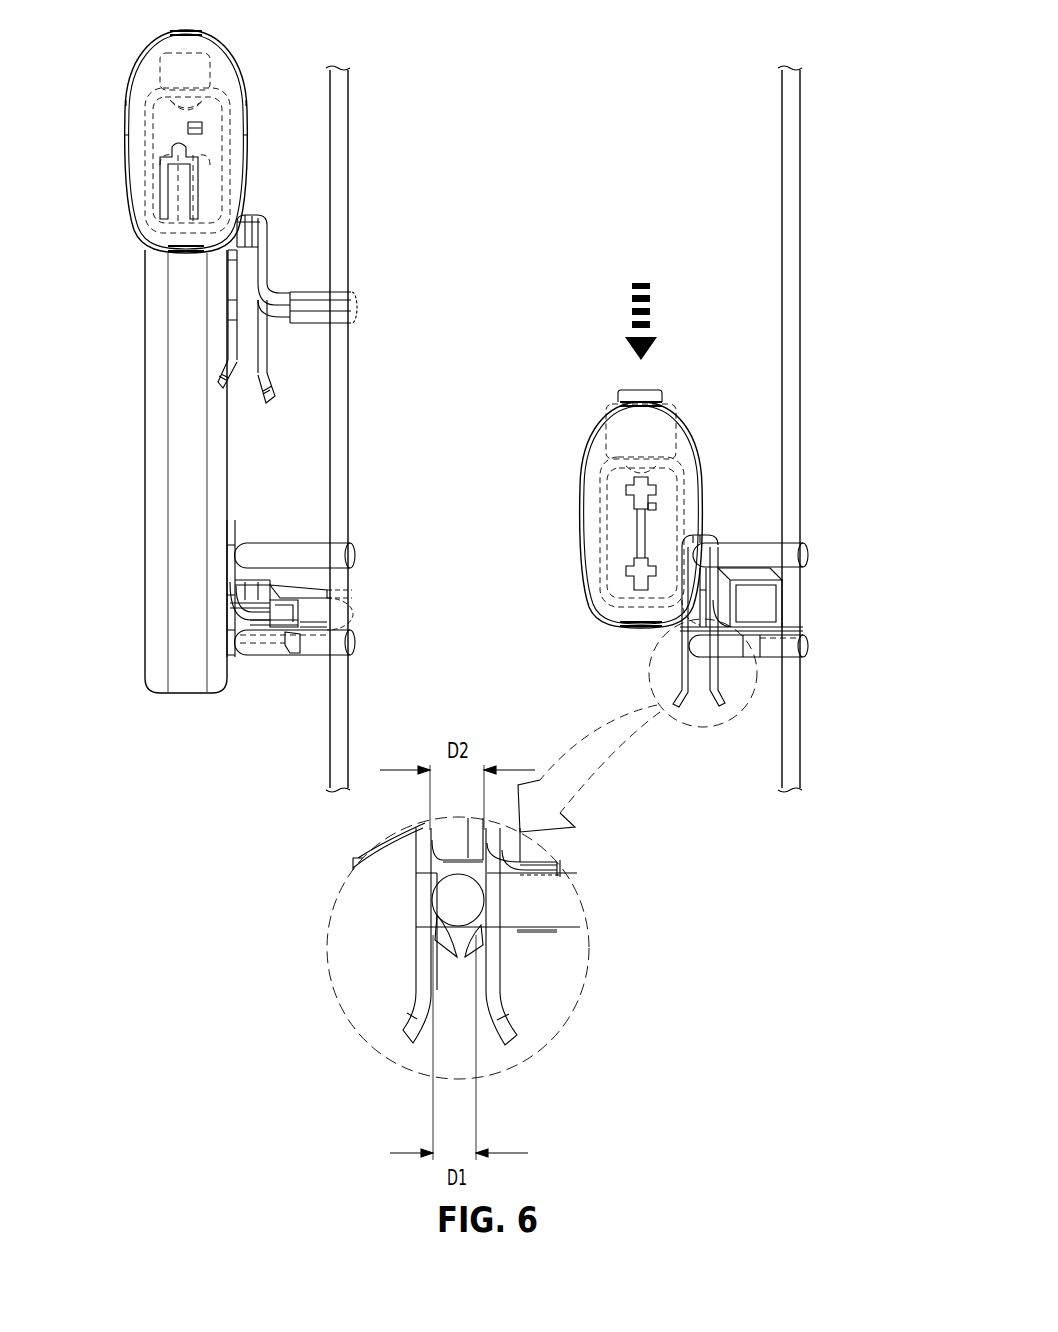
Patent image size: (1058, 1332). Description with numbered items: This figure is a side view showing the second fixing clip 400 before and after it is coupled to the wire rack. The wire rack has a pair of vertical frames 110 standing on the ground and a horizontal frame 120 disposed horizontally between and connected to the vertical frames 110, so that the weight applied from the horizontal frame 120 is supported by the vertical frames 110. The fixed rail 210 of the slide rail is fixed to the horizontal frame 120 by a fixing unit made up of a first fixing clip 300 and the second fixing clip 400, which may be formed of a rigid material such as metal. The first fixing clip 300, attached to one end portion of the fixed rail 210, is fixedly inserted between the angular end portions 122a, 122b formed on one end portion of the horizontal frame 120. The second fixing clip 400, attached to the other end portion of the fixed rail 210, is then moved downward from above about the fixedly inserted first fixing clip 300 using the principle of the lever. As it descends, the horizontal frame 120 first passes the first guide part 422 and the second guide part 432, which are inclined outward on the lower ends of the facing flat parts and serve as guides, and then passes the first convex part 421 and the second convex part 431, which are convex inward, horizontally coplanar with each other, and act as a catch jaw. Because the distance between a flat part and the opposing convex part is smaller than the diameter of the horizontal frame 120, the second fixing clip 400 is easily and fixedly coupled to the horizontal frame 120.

The vertical frame 110 is at (345, 88).
The fixed rail 210 is at (178, 317).
The second fixing clip 400 is at (284, 381).
The angular end portion 122a is at (340, 553).
The angular end portion 122b is at (345, 637).
The first fixing clip 300 is at (353, 609).
The horizontal frame 120 is at (460, 907).
The first convex part 421 is at (457, 927).
The first guide part 422 is at (403, 1030).
The second convex part 431 is at (467, 958).
The second guide part 432 is at (503, 1023).